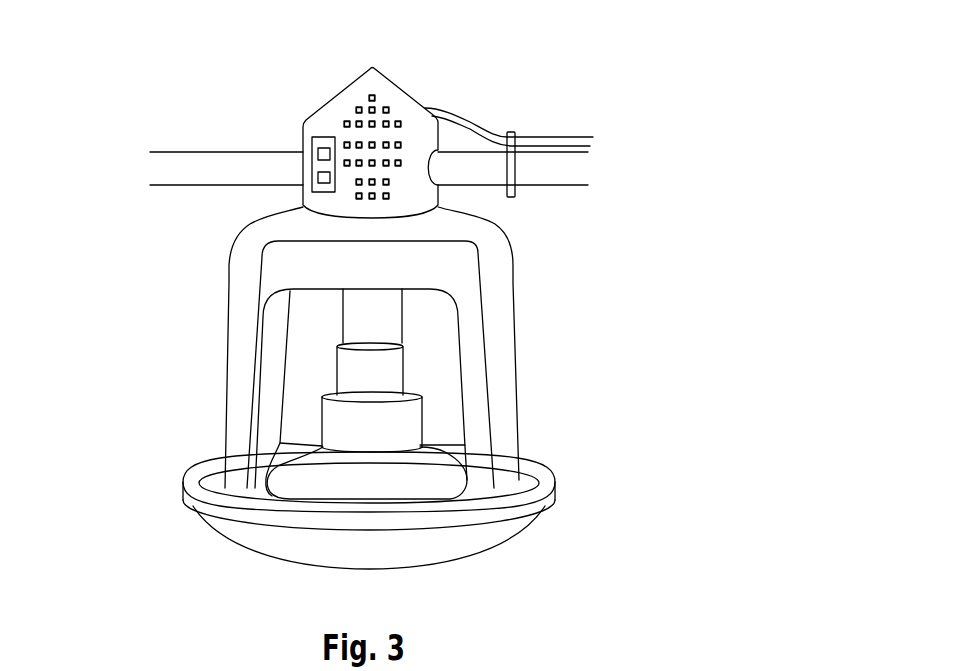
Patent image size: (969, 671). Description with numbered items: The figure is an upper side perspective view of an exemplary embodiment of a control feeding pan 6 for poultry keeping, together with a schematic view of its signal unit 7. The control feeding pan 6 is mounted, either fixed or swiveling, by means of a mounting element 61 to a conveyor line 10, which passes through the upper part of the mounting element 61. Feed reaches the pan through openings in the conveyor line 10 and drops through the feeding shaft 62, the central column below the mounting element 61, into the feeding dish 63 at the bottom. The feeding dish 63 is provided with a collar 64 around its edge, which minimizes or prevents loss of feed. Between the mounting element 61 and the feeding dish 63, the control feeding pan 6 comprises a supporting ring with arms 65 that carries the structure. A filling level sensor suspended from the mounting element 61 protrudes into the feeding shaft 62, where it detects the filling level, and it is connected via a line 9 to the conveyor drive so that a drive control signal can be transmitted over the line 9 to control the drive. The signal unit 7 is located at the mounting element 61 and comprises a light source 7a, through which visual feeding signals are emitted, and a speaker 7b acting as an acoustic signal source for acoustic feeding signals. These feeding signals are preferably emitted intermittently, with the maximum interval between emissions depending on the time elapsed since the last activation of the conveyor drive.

The control feeding pan 6 is at (619, 340).
The signal unit 7 is at (240, 140).
The light source 7a is at (324, 150).
The speaker 7b is at (322, 181).
The line 9 is at (555, 137).
The conveyor line 10 is at (558, 172).
The mounting element 61 is at (407, 75).
The feeding shaft 62 is at (360, 415).
The feeding dish 63 is at (443, 580).
The collar 64 is at (550, 498).
The supporting ring with arms 65 is at (237, 432).